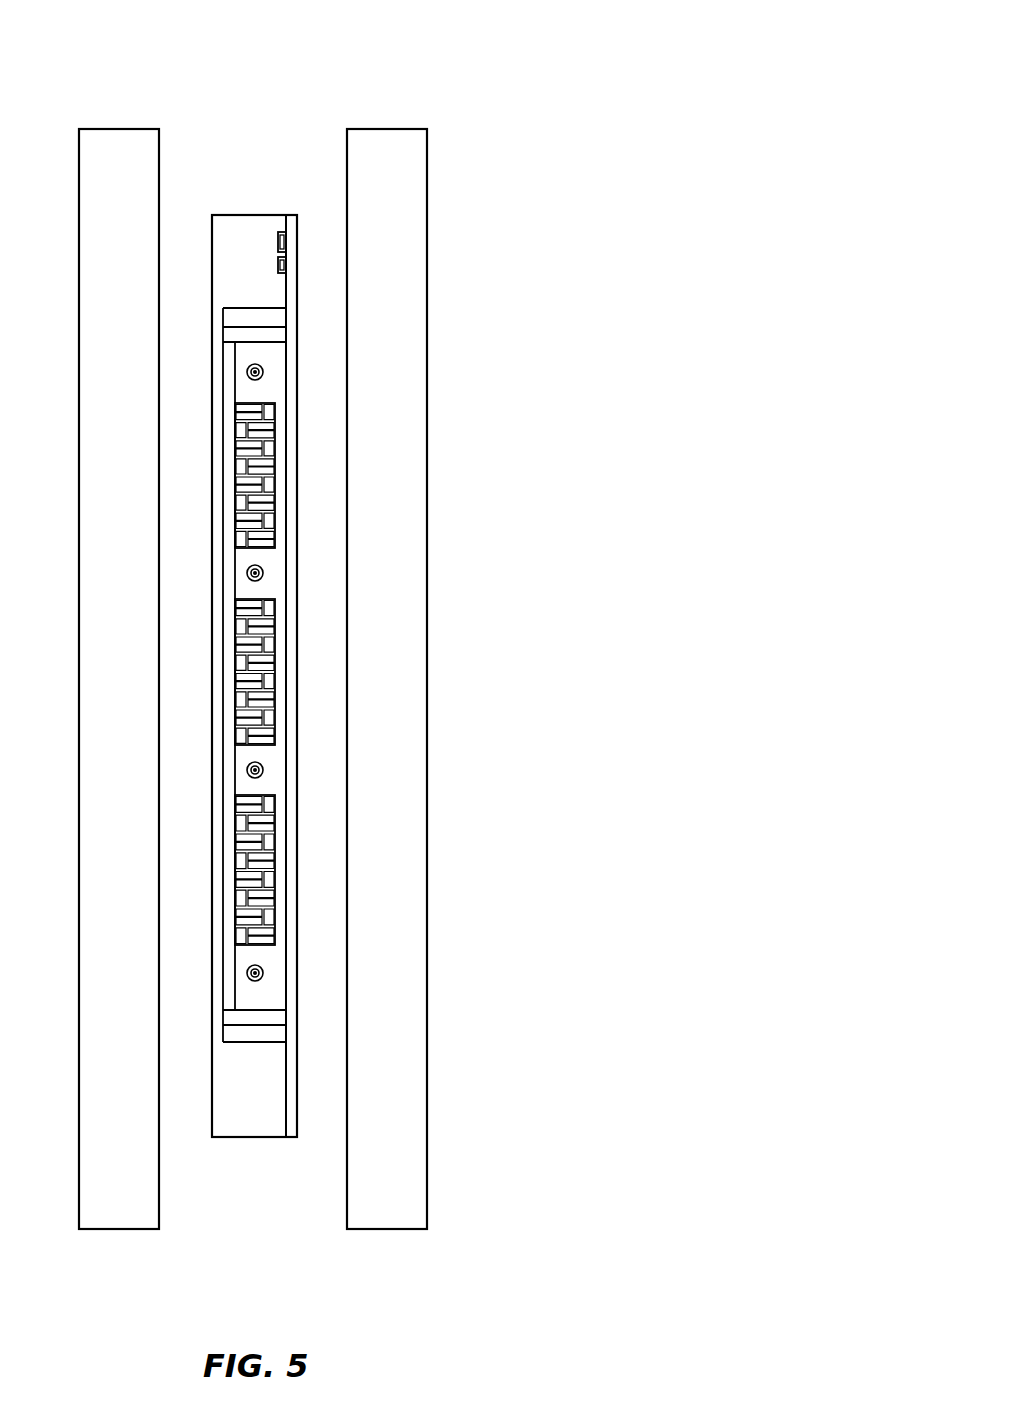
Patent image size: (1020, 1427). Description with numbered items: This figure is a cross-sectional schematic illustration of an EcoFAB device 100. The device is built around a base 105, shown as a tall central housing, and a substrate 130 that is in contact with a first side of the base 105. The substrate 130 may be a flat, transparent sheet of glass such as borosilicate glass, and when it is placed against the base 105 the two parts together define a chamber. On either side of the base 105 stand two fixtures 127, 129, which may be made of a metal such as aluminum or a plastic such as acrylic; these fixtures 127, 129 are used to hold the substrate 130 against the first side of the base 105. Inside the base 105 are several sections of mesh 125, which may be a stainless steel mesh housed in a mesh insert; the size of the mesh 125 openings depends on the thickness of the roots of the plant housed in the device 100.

The EcoFAB device 100 is at (598, 41).
The base 105 is at (224, 1118).
The mesh 125 is at (260, 882).
The fixture 127 is at (106, 150).
The fixture 129 is at (397, 157).
The substrate 130 is at (292, 1118).